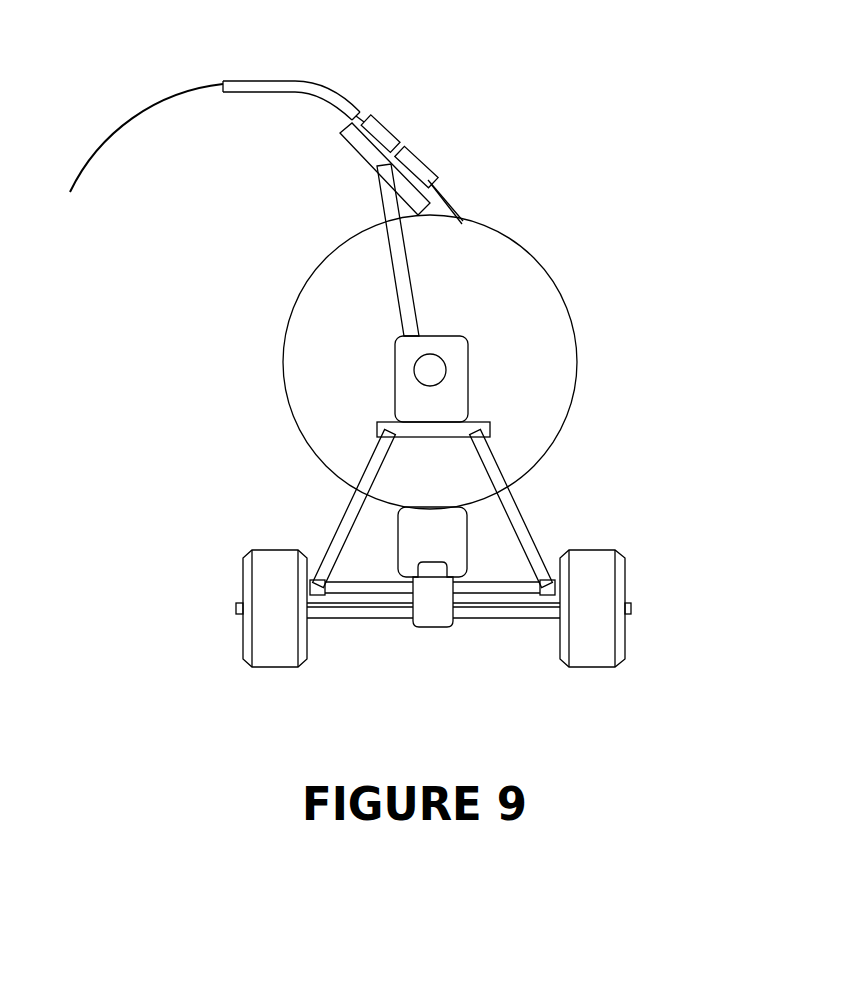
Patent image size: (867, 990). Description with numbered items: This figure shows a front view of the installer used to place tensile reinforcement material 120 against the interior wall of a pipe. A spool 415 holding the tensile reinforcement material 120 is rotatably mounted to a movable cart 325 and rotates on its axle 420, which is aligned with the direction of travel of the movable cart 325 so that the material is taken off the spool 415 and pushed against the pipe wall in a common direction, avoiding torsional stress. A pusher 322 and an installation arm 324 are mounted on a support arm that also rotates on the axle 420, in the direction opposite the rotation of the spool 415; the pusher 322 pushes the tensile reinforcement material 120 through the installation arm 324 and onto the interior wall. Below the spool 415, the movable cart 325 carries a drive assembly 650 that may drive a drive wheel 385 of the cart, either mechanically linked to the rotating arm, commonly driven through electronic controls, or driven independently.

The tensile reinforcement material 120 is at (120, 127).
The installation arm 324 is at (310, 83).
The pusher 322 is at (413, 158).
The spool 415 is at (506, 273).
The axle 420 is at (432, 370).
The movable cart 325 is at (522, 503).
The drive wheel 385 is at (603, 557).
The drive assembly 650 is at (443, 587).